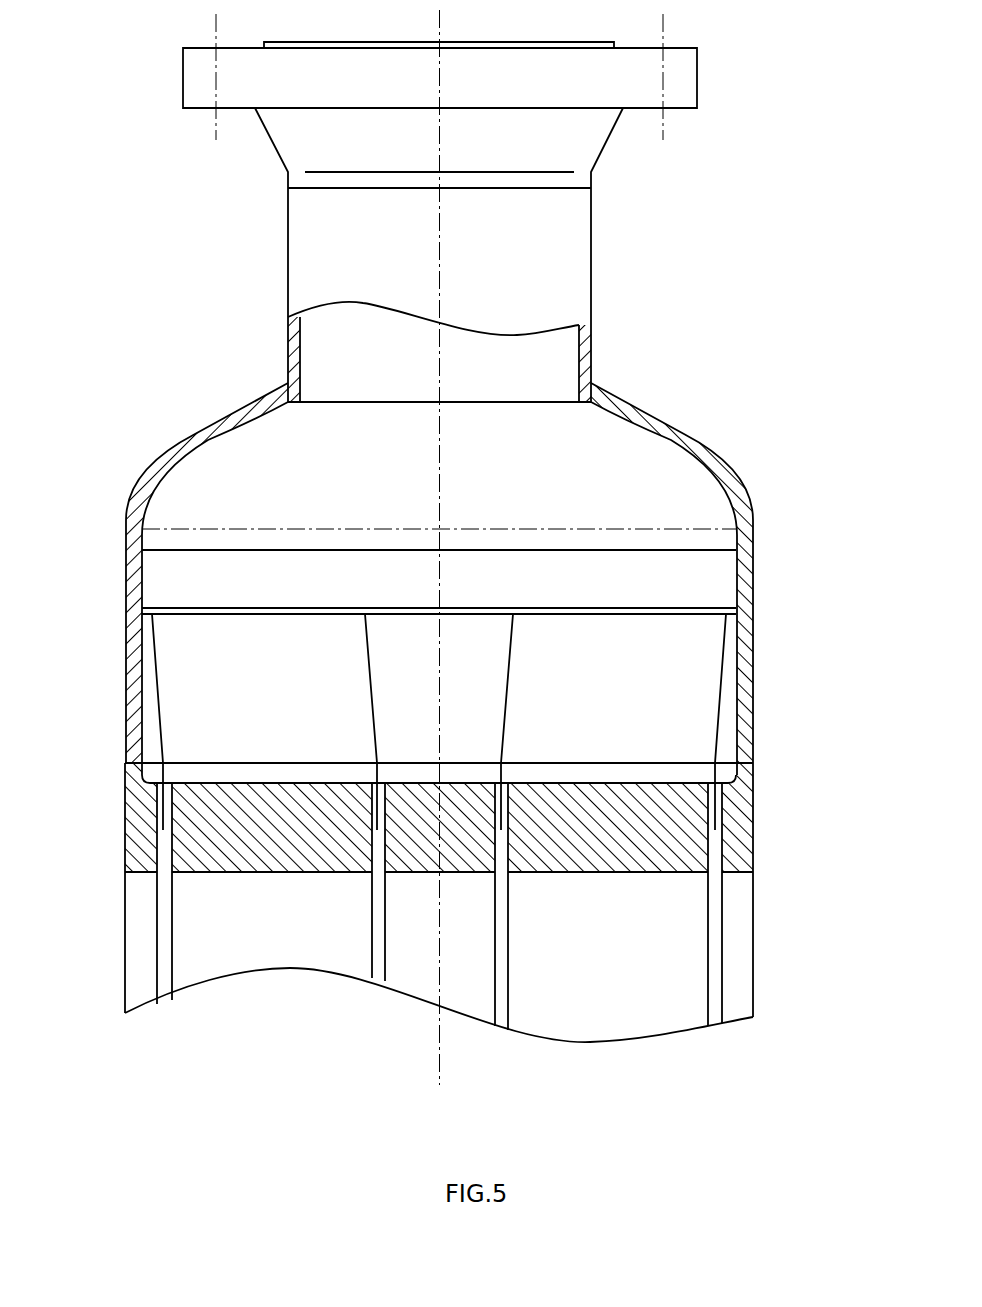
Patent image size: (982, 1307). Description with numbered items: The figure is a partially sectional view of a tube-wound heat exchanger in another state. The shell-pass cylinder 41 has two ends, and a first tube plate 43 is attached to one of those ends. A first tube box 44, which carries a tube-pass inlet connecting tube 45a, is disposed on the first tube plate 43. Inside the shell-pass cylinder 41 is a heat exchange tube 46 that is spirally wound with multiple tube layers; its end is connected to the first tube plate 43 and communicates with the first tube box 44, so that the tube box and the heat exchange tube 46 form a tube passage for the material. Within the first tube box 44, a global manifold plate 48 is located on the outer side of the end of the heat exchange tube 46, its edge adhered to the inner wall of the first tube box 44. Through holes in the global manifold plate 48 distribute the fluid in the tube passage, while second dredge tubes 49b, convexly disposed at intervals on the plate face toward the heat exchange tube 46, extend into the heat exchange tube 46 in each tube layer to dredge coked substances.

The shell-pass cylinder 41 is at (125, 945).
The first tube plate 43 is at (745, 856).
The first tube box 44 is at (677, 420).
The tube-pass inlet connecting tube 45a is at (591, 242).
The heat exchange tube 46 is at (168, 942).
The global manifold plate 48 is at (723, 612).
The second dredge tubes 49b is at (160, 733).